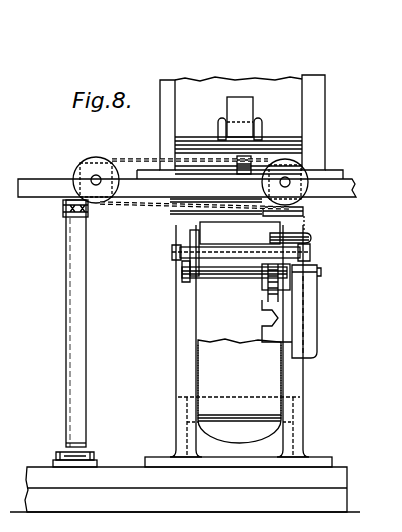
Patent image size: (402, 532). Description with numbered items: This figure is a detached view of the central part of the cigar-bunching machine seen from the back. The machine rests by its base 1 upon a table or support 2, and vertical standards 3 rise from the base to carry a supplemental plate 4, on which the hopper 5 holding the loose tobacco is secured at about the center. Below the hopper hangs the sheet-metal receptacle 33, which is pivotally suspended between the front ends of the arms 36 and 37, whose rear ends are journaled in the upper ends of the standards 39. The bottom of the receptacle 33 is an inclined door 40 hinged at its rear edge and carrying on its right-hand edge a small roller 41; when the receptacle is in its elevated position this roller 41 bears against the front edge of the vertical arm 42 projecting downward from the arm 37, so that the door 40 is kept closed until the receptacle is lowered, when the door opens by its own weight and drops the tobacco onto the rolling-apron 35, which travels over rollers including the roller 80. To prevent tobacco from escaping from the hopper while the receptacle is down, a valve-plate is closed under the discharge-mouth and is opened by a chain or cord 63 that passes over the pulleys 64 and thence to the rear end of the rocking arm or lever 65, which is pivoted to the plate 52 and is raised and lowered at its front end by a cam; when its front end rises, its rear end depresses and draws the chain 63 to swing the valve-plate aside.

The base 1 is at (186, 489).
The table or support 2 is at (185, 520).
The vertical standards 3 is at (75, 333).
The supplemental plate 4 is at (187, 188).
The hopper 5 is at (240, 127).
The receptacle 33 is at (240, 233).
The rolling-apron 35 is at (239, 391).
The arm 36 is at (285, 234).
The arm 37 is at (195, 230).
The standards 39 is at (238, 346).
The inclined door 40 is at (236, 280).
The roller 41 is at (199, 284).
The vertical arm 42 is at (190, 246).
The plate 52 is at (296, 311).
The chain or cord 63 is at (160, 214).
The pulleys 64 is at (322, 207).
The rocking arm or lever 65 is at (262, 290).
The roller 80 is at (240, 418).